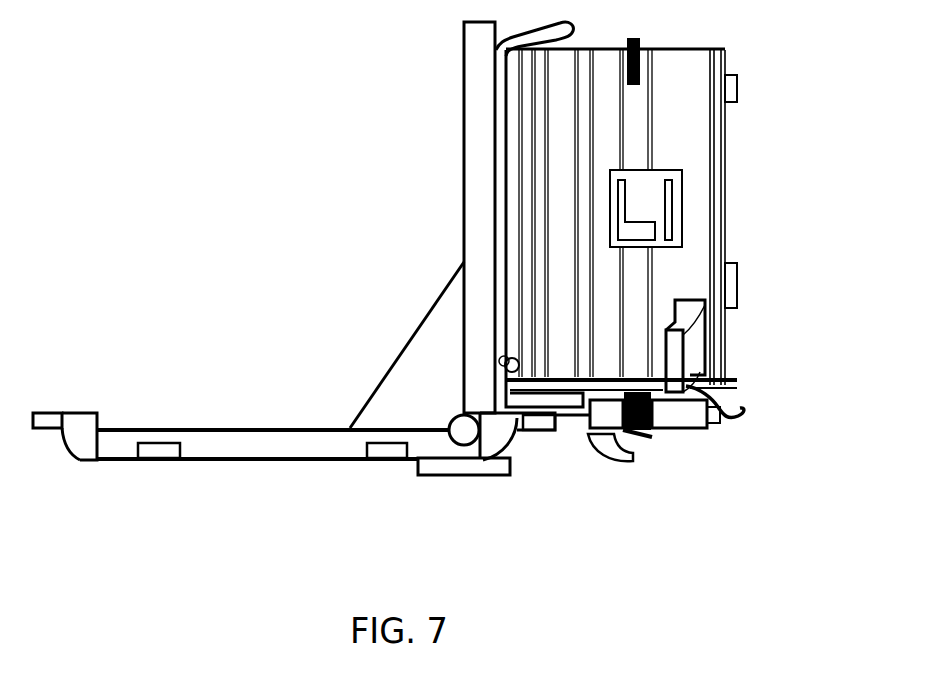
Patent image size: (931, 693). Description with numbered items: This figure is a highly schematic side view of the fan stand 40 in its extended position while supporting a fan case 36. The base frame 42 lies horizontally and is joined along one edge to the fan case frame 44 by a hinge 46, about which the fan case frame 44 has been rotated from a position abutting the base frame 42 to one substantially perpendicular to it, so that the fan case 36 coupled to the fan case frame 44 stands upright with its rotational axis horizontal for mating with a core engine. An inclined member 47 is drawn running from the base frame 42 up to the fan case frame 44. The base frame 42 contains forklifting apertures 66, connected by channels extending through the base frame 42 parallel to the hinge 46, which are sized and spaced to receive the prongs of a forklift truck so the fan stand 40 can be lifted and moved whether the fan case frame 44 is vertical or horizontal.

The fan stand 40 is at (203, 168).
The fan case 36 is at (700, 192).
The fan case frame 44 is at (464, 229).
The strut 47 is at (407, 342).
The base frame 42 is at (287, 428).
The forklifting apertures 66 is at (377, 452).
The hinge 46 is at (465, 446).